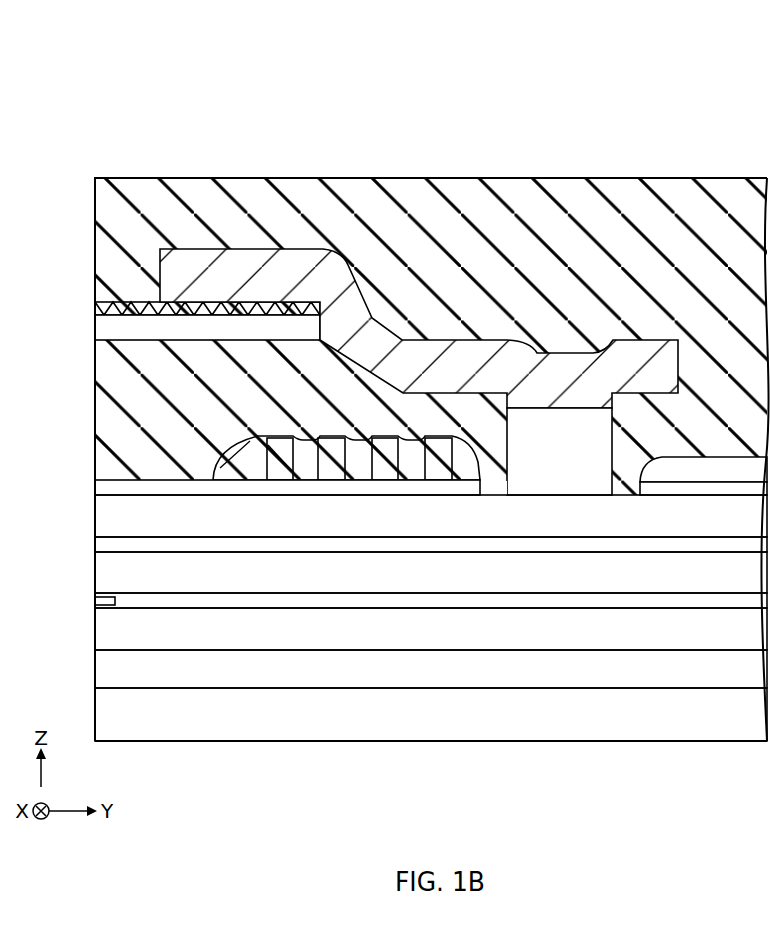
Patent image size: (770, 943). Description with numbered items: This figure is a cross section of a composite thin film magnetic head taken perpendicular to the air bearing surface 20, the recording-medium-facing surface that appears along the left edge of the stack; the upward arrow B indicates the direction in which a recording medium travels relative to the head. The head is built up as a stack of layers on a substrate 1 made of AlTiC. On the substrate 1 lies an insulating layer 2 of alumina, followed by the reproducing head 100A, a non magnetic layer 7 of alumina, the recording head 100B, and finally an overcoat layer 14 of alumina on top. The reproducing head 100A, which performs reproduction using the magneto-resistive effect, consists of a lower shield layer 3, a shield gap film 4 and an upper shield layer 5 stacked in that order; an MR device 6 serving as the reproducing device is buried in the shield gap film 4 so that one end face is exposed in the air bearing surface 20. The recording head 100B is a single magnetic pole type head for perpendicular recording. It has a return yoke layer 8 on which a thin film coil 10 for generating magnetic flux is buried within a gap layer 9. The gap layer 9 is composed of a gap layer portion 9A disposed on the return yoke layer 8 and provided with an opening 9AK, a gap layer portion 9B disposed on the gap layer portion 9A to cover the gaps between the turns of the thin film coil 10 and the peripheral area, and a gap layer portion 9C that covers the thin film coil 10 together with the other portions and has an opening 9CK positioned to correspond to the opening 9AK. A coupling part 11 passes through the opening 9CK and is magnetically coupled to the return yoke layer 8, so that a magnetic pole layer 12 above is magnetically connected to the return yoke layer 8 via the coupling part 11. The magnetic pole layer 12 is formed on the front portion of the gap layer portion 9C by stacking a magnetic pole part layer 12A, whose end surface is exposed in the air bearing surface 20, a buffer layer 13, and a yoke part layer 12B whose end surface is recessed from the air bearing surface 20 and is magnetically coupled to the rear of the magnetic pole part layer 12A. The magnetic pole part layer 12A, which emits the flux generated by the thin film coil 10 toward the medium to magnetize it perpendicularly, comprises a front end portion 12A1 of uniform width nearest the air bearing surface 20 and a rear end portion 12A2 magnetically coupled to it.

The substrate 1 is at (732, 730).
The insulating layer 2 is at (675, 668).
The lower shield layer 3 is at (628, 630).
The shield gap film 4 is at (573, 601).
The upper shield layer 5 is at (518, 572).
The MR device 6 is at (106, 607).
The non magnetic layer 7 is at (459, 545).
The return yoke layer 8 is at (412, 517).
The gap layer 9 is at (320, 797).
The gap layer portion 9A is at (303, 490).
The gap layer portion 9B is at (333, 467).
The gap layer portion 9C is at (250, 463).
The opening 9AK is at (490, 488).
The opening 9CK is at (603, 456).
The thin film coil 10 is at (337, 528).
The coupling part 11 is at (555, 450).
The magnetic pole layer 12 is at (107, 90).
The magnetic pole part layer 12A is at (72, 134).
The front end portion 12A1 is at (112, 311).
The rear end portion 12A2 is at (165, 328).
The yoke part layer 12B is at (228, 278).
The buffer layer 13 is at (275, 300).
The overcoat layer 14 is at (736, 208).
The air bearing surface 20 is at (92, 214).
The reproducing head 100A is at (92, 552).
The recording head 100B is at (92, 247).
The upward arrow B is at (12, 670).